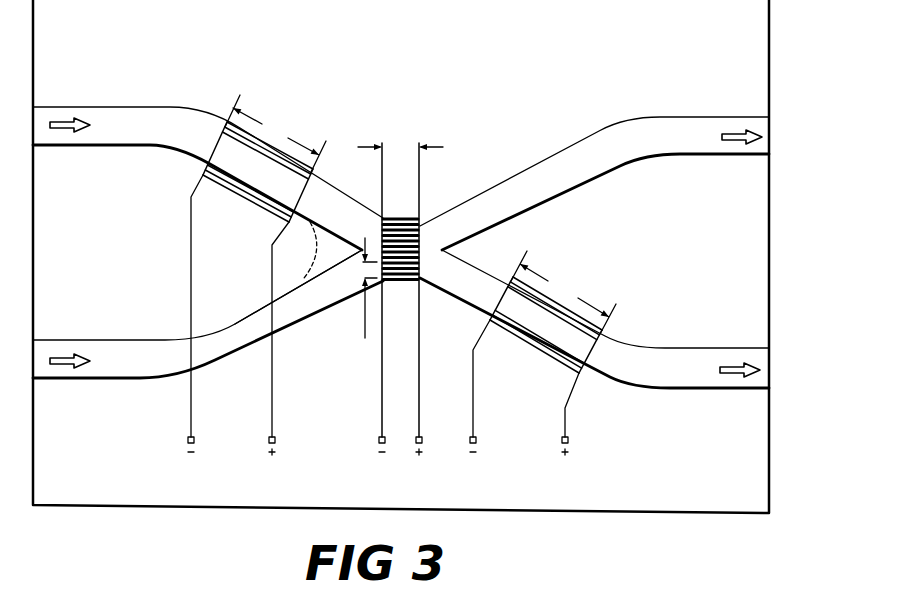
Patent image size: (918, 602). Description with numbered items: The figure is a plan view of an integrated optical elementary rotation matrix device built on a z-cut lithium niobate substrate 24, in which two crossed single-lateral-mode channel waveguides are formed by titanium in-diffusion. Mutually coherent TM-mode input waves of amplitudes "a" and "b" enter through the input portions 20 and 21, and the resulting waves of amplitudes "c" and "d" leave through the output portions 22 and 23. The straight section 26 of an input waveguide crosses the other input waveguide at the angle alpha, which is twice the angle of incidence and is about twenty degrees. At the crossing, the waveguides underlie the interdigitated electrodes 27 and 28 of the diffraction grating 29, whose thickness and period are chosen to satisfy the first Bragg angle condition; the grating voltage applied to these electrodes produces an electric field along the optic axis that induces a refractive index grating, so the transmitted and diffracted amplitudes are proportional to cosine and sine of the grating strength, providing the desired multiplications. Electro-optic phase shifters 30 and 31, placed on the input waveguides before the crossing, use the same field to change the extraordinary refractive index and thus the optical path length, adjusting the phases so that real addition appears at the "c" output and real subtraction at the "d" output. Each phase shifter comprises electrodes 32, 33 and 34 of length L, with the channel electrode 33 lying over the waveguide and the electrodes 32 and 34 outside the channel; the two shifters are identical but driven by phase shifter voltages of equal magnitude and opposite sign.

The input portion of crossed channel waveguide 20 is at (115, 364).
The input portion of crossed channel waveguide 21 is at (135, 127).
The output portion of crossed channel waveguide 22 is at (558, 167).
The output portion of crossed channel waveguide 23 is at (619, 358).
The z-cut lithium niobate substrate 24 is at (745, 480).
The straight section of input waveguide 26 is at (306, 318).
The interdigitated electrode 27 is at (403, 219).
The interdigitated electrode 28 is at (406, 222).
The diffraction grating 29 is at (410, 282).
The electro-optic phase shifter 30 is at (273, 274).
The electro-optic phase shifter 31 is at (592, 271).
The electrode outside the channel 32 is at (258, 205).
The channel electrode 33 is at (301, 191).
The electrode outside the channel 34 is at (226, 122).